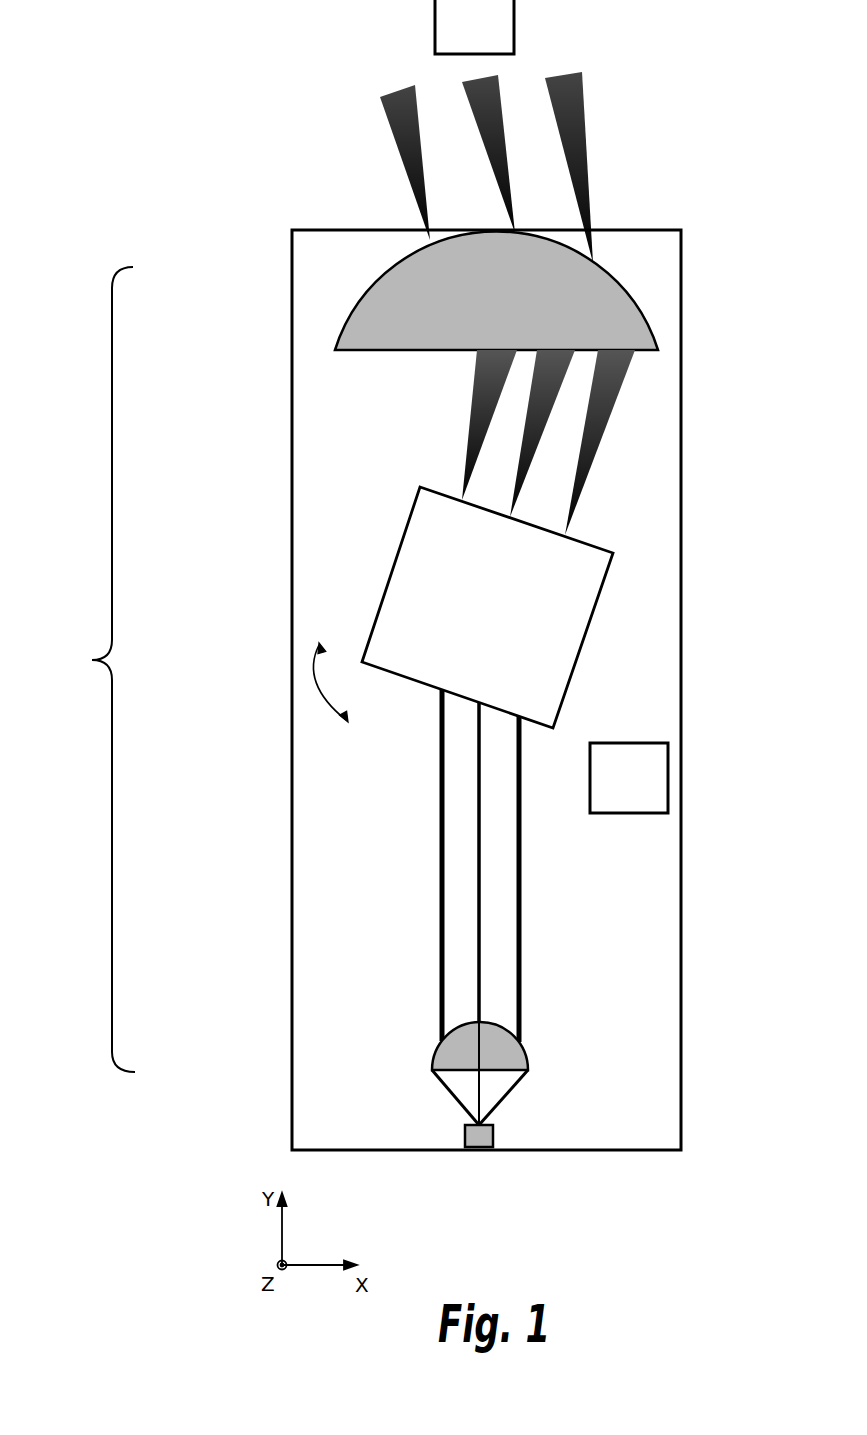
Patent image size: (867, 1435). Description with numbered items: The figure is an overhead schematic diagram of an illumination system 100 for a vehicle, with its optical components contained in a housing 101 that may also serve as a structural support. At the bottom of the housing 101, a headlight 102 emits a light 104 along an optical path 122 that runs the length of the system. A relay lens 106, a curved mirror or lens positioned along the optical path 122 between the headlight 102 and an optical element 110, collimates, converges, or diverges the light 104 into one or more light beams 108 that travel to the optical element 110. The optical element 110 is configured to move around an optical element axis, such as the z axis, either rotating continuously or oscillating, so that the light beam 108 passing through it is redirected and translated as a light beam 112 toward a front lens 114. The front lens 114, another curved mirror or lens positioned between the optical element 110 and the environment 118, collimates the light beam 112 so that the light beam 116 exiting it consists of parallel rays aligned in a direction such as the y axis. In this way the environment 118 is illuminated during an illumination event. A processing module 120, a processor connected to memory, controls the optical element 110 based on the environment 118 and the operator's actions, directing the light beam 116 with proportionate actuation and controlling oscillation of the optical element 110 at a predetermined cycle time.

The illumination system 100 is at (461, 690).
The housing 101 is at (288, 1135).
The headlight 102 is at (500, 1127).
The light 104 is at (515, 1093).
The relay lens 106 is at (533, 1058).
The light beam 108 is at (527, 1002).
The optical element 110 is at (606, 580).
The light beam 112 is at (613, 428).
The front lens 114 is at (636, 291).
The light beam 116 is at (590, 152).
The environment 118 is at (456, 36).
The processing module 120 is at (611, 792).
The optical path 122 is at (96, 669).